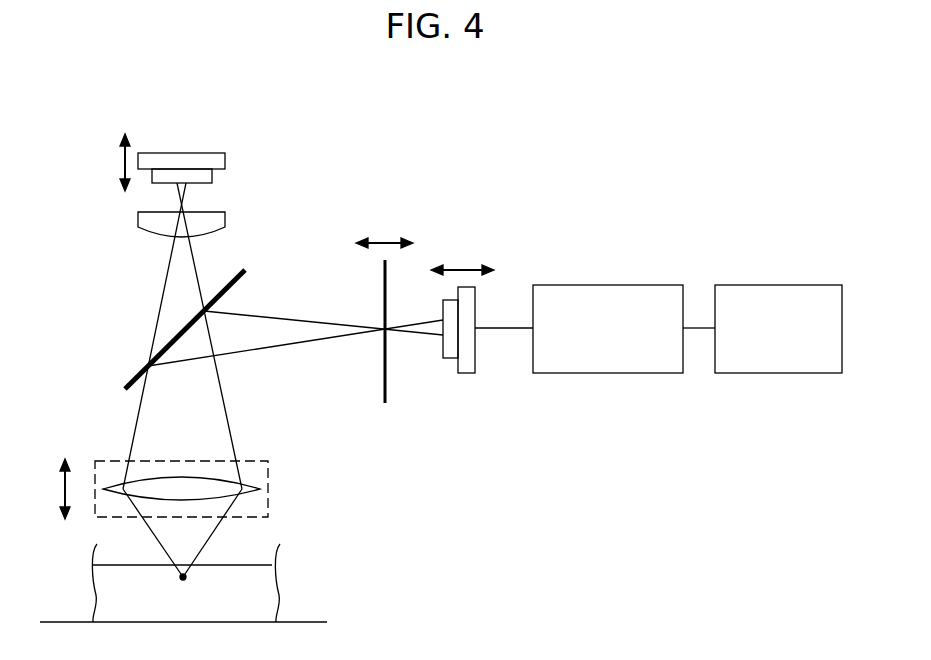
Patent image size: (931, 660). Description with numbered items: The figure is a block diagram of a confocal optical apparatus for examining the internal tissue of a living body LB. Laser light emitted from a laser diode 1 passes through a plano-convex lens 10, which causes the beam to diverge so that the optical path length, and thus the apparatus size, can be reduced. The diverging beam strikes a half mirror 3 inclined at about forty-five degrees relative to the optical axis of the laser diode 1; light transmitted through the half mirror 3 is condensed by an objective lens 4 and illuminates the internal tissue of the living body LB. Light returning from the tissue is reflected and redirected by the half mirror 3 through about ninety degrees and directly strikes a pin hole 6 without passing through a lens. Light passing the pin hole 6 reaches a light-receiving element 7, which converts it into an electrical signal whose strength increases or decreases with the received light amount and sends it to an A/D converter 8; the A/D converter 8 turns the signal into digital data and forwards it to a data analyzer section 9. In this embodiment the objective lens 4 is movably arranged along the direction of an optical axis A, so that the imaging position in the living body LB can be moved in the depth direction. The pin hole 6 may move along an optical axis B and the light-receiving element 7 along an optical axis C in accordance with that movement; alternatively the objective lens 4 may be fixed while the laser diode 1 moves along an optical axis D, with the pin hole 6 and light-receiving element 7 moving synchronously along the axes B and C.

The laser diode 1 is at (220, 160).
The plano-convex lens 10 is at (225, 217).
The half mirror 3 is at (245, 270).
The objective lens 4 is at (268, 493).
The pin hole 6 is at (389, 380).
The light-receiving element 7 is at (476, 365).
The A/D converter 8 is at (625, 285).
The data analyzer section 9 is at (787, 285).
The living body LB is at (270, 590).
The optical axis A is at (62, 489).
The optical axis B is at (387, 241).
The optical axis C is at (461, 267).
The optical axis D is at (121, 160).